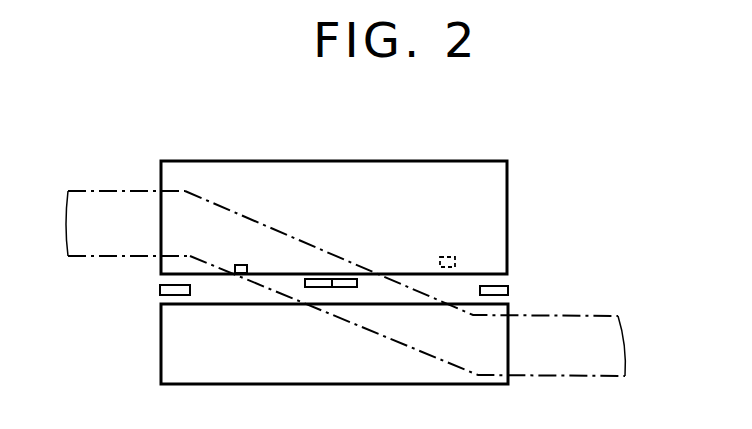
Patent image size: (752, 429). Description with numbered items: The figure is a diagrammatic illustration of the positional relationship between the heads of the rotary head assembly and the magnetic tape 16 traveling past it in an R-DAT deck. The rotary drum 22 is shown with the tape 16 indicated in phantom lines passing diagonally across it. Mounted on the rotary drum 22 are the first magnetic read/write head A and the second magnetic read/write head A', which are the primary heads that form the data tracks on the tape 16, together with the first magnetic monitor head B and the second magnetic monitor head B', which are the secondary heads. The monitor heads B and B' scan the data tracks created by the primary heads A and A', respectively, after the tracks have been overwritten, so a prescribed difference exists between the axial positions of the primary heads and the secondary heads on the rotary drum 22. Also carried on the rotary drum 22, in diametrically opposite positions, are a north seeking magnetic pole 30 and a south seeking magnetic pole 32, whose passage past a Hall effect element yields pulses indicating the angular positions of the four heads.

The rotary drum 22 is at (508, 220).
The magnetic tape 16 is at (585, 316).
The south seeking magnetic pole 32 is at (240, 266).
The second magnetic read/write head A' is at (304, 202).
The first magnetic read/write head A is at (351, 202).
The north seeking magnetic pole 30 is at (447, 257).
The first magnetic monitor head B is at (152, 290).
The second magnetic monitor head B' is at (527, 273).